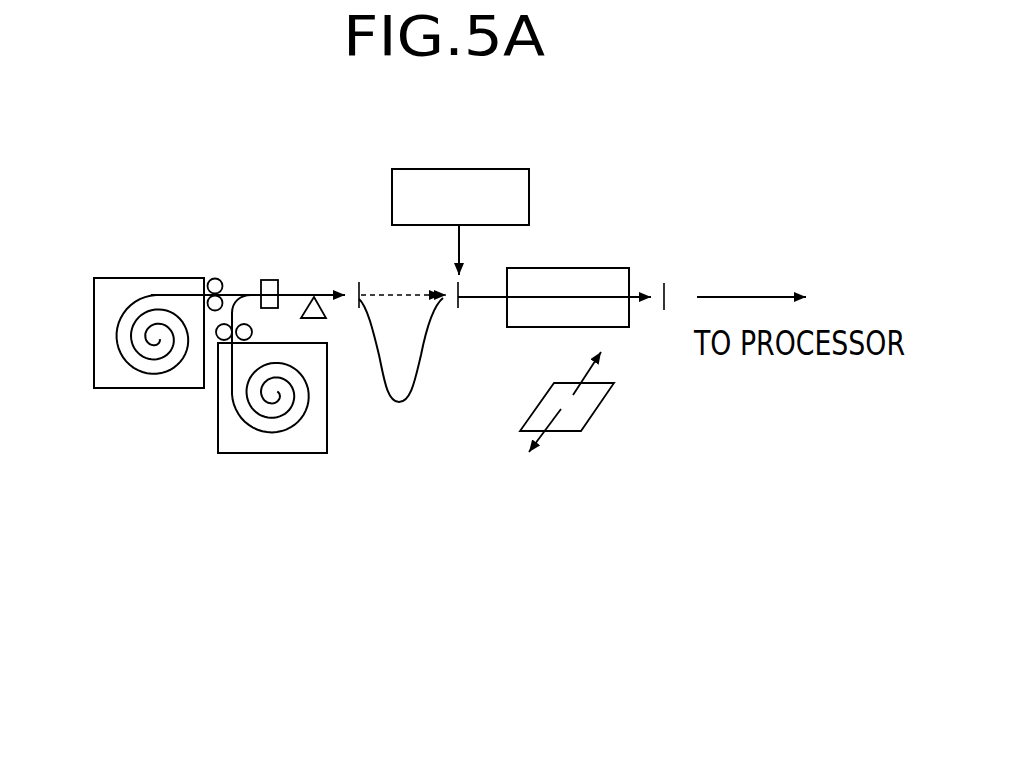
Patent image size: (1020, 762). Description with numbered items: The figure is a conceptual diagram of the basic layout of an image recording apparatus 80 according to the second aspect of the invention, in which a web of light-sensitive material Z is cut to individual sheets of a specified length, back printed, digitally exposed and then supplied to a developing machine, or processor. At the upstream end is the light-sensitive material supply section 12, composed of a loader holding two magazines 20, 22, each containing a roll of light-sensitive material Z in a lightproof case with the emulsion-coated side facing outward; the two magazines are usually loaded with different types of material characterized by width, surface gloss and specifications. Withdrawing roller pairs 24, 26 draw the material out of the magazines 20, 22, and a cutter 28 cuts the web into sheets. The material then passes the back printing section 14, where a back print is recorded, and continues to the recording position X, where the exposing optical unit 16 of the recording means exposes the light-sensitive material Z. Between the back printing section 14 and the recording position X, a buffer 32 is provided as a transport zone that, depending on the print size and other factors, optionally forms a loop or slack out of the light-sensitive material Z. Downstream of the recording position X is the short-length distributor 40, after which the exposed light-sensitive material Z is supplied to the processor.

The light-sensitive material supply section 12 is at (265, 190).
The back printing section 14 is at (313, 278).
The exposing optical unit 16 is at (497, 186).
The magazine 20 is at (160, 385).
The magazine 22 is at (250, 453).
The withdrawing roller pair 24 is at (208, 279).
The withdrawing roller pair 26 is at (223, 323).
The cutter 28 is at (270, 280).
The buffer 32 is at (419, 420).
The short-length distributor 40 is at (585, 283).
The image recording apparatus 80 is at (730, 191).
The light-sensitive material Z is at (118, 368).
The recording position X is at (458, 315).